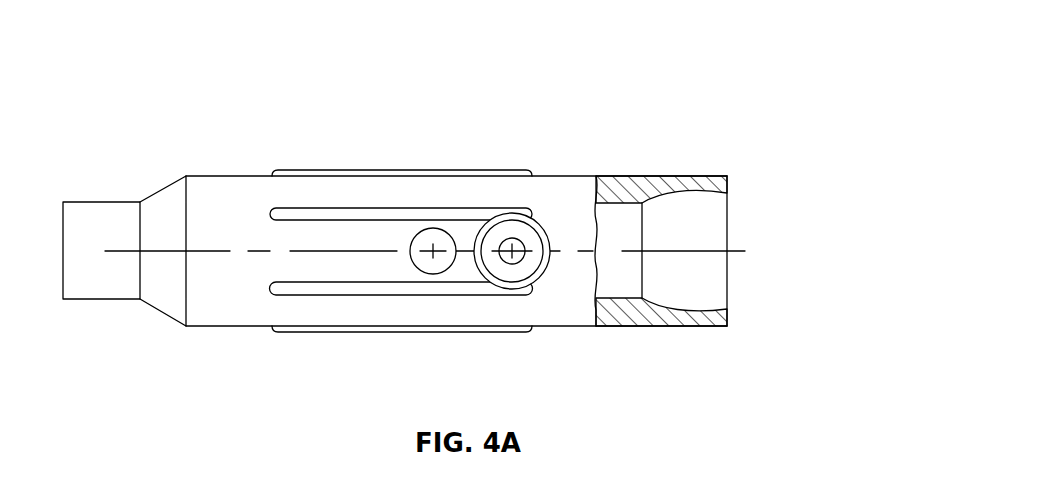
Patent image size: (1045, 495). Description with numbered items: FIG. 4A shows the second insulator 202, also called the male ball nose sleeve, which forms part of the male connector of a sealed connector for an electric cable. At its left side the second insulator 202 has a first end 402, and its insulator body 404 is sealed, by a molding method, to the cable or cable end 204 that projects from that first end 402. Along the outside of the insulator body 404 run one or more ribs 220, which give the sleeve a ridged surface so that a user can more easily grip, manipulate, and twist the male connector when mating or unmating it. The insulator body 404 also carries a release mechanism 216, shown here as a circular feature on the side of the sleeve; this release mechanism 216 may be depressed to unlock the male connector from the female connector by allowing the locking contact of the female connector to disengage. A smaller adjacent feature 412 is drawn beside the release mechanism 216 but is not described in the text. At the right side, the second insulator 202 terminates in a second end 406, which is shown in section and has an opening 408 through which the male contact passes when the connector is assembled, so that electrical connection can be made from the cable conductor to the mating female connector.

The second insulator 202 is at (755, 97).
The cable end 204 is at (108, 212).
The first end 402 is at (160, 312).
The insulator body 404 is at (255, 188).
The ribs 220 is at (420, 213).
The small port 412 is at (420, 273).
The release mechanism 216 is at (499, 289).
The second end 406 is at (720, 176).
The opening 408 is at (727, 233).